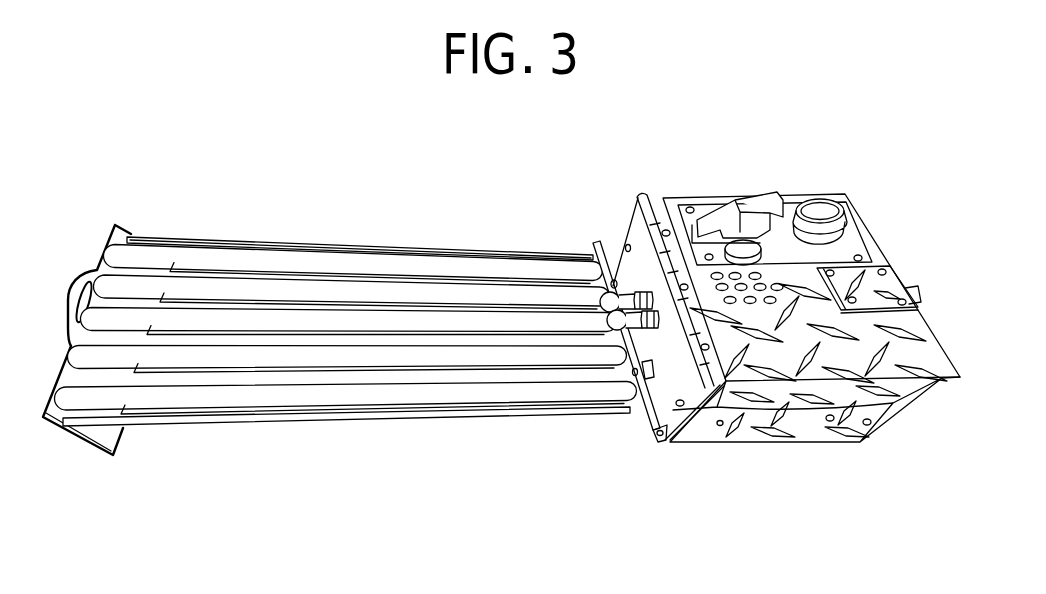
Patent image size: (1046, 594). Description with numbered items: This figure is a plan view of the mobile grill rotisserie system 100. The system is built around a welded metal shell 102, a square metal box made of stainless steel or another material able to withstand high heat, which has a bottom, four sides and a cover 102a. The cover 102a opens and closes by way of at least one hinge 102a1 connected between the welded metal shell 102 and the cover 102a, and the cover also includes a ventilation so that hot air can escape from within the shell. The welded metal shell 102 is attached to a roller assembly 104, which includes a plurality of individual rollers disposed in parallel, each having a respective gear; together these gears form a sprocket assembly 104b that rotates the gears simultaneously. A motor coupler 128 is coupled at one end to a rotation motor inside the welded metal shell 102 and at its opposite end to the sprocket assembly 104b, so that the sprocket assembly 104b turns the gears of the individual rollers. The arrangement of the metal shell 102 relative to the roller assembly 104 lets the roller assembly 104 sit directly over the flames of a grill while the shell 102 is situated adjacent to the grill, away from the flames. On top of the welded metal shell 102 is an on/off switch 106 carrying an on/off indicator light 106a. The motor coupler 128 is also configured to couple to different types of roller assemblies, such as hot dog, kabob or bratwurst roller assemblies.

The mobile grill rotisserie system 100 is at (243, 197).
The welded metal shell 102 is at (892, 398).
The cover 102a is at (876, 302).
The hinge 102a1 is at (723, 395).
The roller assembly 104 is at (88, 252).
The sprocket assembly 104b is at (628, 417).
The on/off switch 106 is at (758, 202).
The on/off indicator light 106a is at (840, 201).
The motor coupler 128 is at (612, 283).